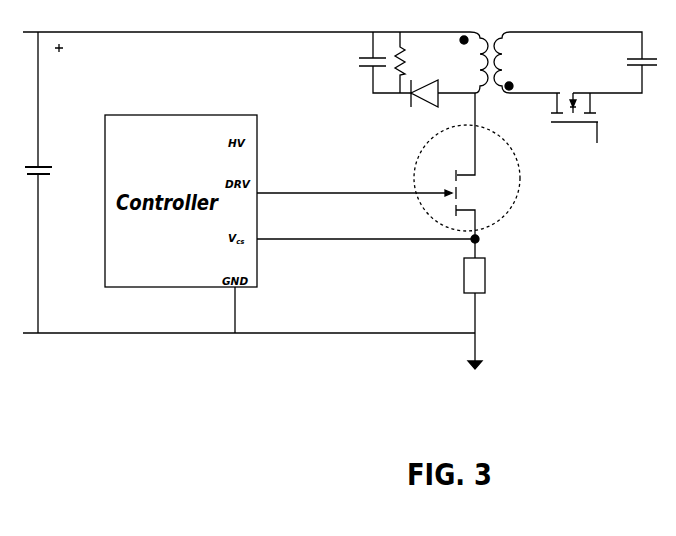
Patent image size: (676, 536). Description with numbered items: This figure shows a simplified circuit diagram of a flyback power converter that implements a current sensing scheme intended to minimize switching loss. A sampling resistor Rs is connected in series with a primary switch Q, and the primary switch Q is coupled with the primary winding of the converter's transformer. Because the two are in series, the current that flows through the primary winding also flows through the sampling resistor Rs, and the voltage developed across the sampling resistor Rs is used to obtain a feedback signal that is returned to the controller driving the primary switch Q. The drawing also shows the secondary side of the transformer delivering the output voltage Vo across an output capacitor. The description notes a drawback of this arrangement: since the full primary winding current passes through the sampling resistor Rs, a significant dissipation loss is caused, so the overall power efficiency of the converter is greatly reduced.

The primary switch Q is at (467, 175).
The sampling resistor Rs is at (461, 313).
The output voltage Vo is at (608, 61).